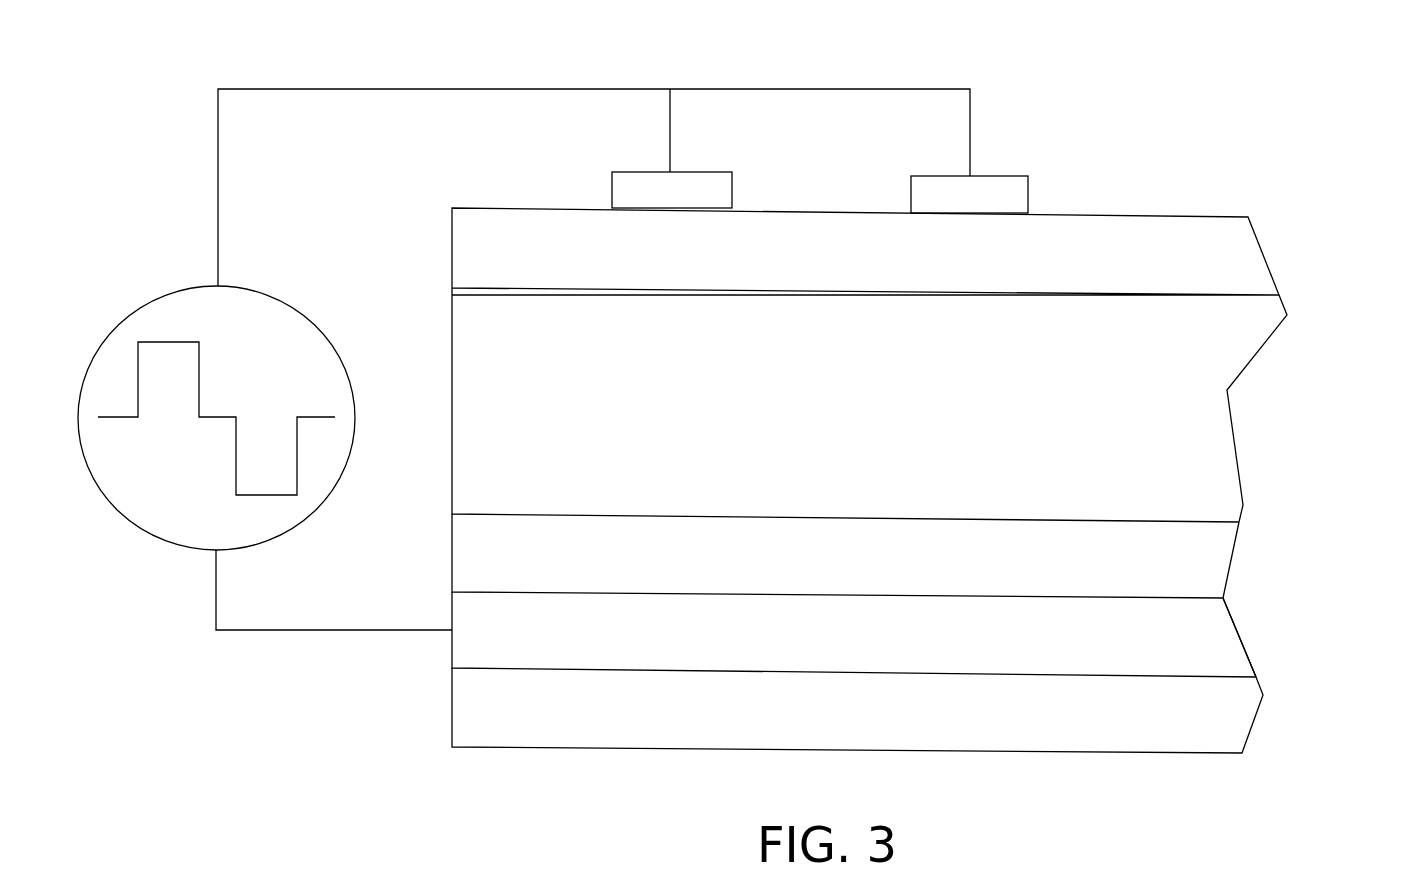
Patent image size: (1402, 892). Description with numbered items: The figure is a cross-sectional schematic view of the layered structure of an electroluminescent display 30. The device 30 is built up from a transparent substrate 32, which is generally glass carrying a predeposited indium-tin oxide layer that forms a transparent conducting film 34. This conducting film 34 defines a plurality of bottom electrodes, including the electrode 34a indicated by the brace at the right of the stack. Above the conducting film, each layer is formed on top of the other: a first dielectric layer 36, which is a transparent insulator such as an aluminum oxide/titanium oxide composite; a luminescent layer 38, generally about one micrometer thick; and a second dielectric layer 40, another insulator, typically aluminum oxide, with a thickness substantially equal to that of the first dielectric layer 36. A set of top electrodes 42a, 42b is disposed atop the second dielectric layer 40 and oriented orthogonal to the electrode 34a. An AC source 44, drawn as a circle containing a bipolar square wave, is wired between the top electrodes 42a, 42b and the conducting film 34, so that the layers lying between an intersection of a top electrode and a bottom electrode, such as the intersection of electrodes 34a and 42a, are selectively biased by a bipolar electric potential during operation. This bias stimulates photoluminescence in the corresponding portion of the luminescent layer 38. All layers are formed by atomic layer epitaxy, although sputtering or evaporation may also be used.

The electroluminescent display 30 is at (1252, 74).
The transparent substrate 32 is at (1242, 717).
The transparent conducting film 34 is at (470, 650).
The electrode 34a is at (1277, 598).
The first dielectric layer 36 is at (1225, 560).
The luminescent layer 38 is at (1207, 447).
The second dielectric layer 40 is at (1248, 257).
The electrode 42a is at (612, 185).
The electrode 42b is at (1029, 195).
The AC source 44 is at (140, 305).